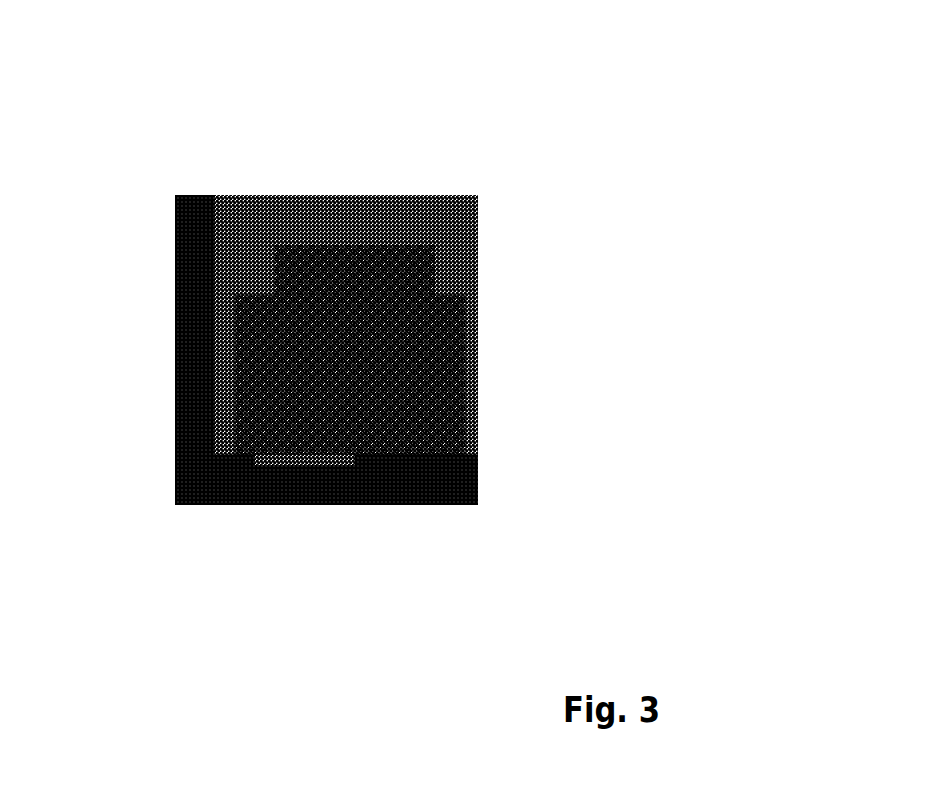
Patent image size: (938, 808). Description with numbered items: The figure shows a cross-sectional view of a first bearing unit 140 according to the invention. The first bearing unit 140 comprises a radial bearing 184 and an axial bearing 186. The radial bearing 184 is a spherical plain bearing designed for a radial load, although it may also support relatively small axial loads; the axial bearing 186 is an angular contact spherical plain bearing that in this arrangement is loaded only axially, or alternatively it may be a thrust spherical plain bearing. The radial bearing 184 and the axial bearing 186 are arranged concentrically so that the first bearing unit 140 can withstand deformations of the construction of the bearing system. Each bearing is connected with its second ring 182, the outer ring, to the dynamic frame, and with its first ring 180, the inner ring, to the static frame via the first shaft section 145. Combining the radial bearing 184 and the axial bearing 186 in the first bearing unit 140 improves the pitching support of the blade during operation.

The first bearing unit 140 is at (597, 42).
The first shaft section 145 is at (204, 357).
The first ring 180 is at (305, 290).
The second ring 182 is at (400, 243).
The radial bearing 184 is at (385, 470).
The axial bearing 186 is at (278, 480).